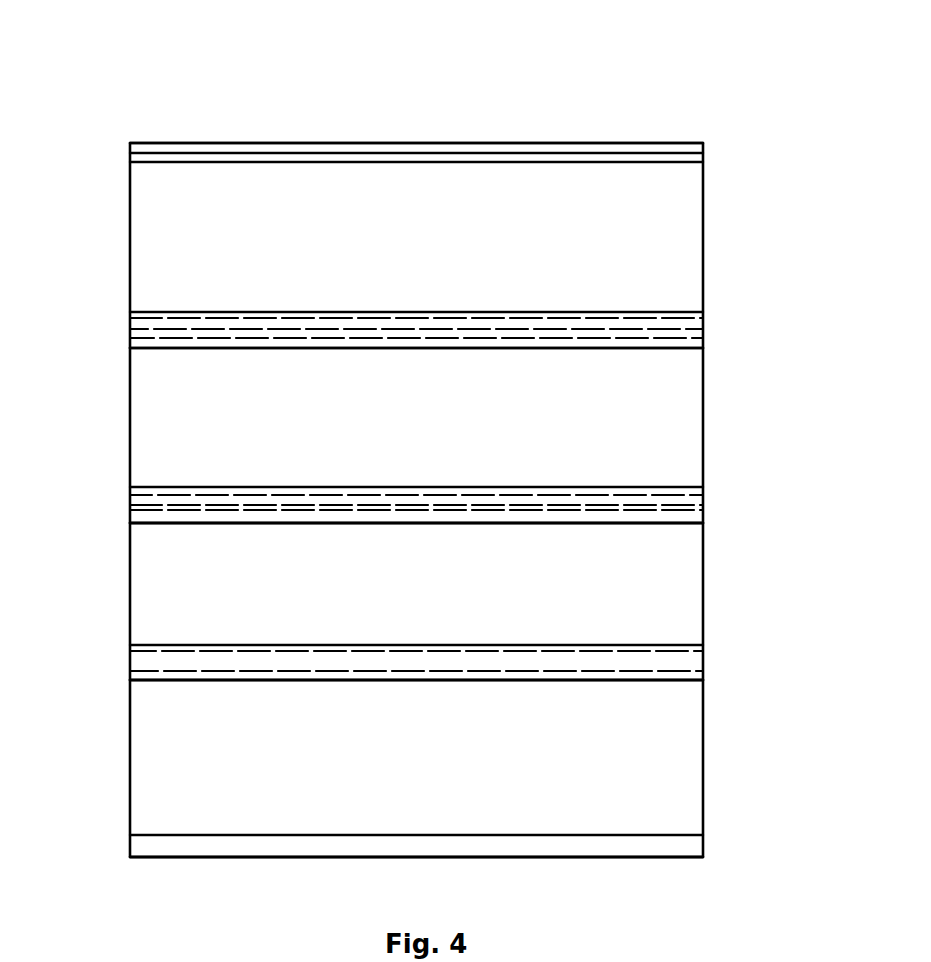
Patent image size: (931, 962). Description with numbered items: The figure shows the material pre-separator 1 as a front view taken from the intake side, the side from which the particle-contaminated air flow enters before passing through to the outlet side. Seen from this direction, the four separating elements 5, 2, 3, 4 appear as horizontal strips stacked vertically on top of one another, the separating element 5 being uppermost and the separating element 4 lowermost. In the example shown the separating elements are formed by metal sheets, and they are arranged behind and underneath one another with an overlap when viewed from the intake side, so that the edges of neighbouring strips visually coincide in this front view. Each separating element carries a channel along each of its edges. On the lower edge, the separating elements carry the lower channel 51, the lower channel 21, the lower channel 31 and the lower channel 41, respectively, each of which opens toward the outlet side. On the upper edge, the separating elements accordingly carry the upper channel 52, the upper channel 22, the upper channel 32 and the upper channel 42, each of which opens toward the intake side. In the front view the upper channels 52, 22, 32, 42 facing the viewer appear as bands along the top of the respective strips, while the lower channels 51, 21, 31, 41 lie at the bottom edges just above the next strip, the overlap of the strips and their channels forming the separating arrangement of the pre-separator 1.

The material pre-separator 1 is at (86, 76).
The separating element 5 is at (682, 244).
The upper channel 52 is at (675, 143).
The lower channel 51 is at (657, 347).
The separating element 2 is at (675, 420).
The upper channel 22 is at (670, 333).
The lower channel 21 is at (678, 523).
The separating element 3 is at (672, 587).
The upper channel 32 is at (690, 505).
The lower channel 31 is at (685, 680).
The separating element 4 is at (677, 760).
The upper channel 42 is at (693, 651).
The lower channel 41 is at (698, 850).